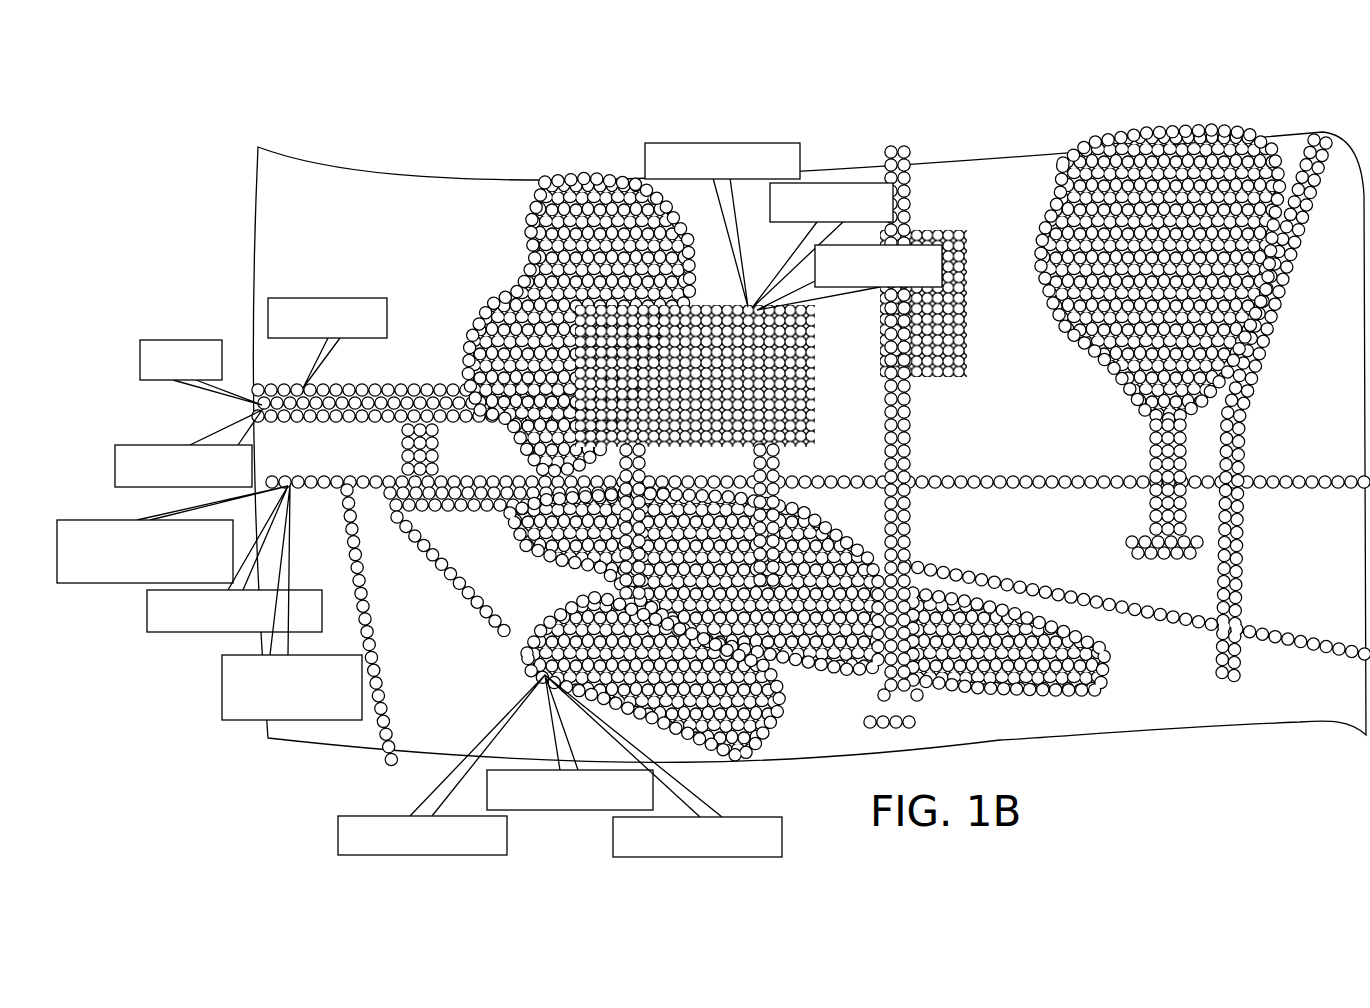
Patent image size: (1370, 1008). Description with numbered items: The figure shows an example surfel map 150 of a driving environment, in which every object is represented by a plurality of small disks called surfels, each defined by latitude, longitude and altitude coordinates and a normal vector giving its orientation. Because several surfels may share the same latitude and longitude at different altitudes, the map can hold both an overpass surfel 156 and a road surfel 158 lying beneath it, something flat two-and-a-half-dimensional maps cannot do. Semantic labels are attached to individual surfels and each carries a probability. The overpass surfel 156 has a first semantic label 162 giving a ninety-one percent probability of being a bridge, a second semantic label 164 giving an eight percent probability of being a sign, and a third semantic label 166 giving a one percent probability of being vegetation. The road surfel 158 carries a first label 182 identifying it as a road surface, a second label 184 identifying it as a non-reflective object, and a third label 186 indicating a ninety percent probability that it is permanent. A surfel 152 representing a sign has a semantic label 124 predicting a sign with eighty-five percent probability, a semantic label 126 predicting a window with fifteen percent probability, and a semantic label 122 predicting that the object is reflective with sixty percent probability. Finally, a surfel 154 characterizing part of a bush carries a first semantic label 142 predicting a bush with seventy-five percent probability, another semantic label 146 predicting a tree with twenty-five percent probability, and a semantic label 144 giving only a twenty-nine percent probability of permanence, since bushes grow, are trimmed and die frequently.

The surfel map 150 is at (184, 50).
The semantic label 122 is at (727, 143).
The semantic label 124 is at (866, 183).
The semantic label 126 is at (942, 245).
The surfel 152 is at (746, 300).
The first semantic label 162 is at (322, 298).
The second semantic label 164 is at (140, 362).
The third semantic label 166 is at (115, 466).
The first label 182 is at (112, 519).
The second label 184 is at (147, 612).
The third label 186 is at (222, 688).
The overpass surfel 156 is at (301, 429).
The road surfel 158 is at (293, 491).
The surfel 154 is at (536, 678).
The first semantic label 142 is at (565, 810).
The semantic label 144 is at (410, 855).
The semantic label 146 is at (710, 857).